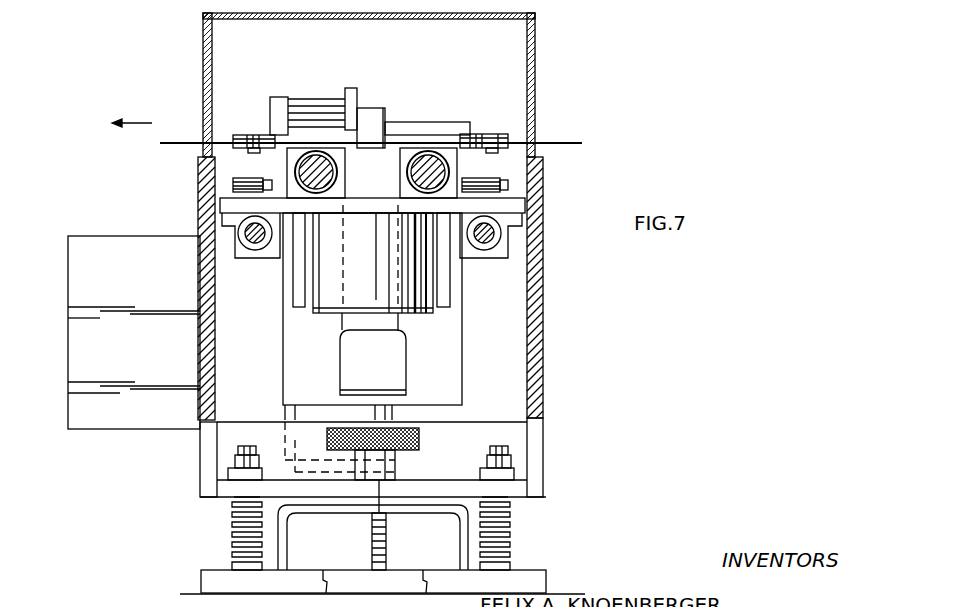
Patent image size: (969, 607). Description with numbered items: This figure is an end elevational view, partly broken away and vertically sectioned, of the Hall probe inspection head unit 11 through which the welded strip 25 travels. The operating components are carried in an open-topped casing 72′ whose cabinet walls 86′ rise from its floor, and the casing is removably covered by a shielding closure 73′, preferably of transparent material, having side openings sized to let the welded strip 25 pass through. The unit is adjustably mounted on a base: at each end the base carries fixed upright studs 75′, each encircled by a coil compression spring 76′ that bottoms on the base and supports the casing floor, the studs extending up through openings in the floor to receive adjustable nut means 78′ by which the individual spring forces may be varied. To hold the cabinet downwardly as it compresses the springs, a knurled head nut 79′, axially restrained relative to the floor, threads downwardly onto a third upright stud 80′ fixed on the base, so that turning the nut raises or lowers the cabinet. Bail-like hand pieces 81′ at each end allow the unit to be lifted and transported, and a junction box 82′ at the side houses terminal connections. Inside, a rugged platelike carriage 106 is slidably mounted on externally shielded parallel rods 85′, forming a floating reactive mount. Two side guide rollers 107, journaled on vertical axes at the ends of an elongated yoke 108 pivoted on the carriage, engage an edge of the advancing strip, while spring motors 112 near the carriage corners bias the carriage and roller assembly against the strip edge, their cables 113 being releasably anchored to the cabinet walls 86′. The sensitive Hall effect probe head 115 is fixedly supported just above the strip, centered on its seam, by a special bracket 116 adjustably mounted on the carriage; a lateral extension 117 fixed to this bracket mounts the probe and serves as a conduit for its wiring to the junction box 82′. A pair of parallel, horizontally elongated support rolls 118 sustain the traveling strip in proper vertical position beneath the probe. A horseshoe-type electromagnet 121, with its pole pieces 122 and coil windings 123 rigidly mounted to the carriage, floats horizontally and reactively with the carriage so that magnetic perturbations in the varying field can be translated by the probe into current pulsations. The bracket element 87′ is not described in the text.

The Hall probe unit 11 is at (607, 287).
The welded strip 25 is at (556, 140).
The casing 72′ is at (541, 262).
The shielding closure 73′ is at (535, 94).
The upright studs 75′ is at (240, 538).
The coil compression spring 76′ is at (512, 545).
The adjustable nut means 78′ is at (236, 462).
The knurled head nut 79′ is at (420, 443).
The upright stud 80′ is at (387, 558).
The hand pieces 81′ is at (336, 518).
The junction box 82′ is at (106, 250).
The rods 85′ is at (242, 238).
The cabinet walls 86′ is at (516, 334).
The roller brackets 87′ is at (258, 258).
The carriage 106 is at (318, 207).
The side guide rollers 107 is at (250, 136).
The yoke 108 is at (437, 125).
The spring motors 112 is at (235, 184).
The cables 113 is at (508, 187).
The Hall effect probe head 115 is at (282, 108).
The bracket 116 is at (379, 130).
The lateral extension 117 is at (332, 102).
The support rolls 118 is at (300, 171).
The electromagnet 121 is at (332, 316).
The pole pieces 122 is at (393, 138).
The coil windings 123 is at (412, 316).